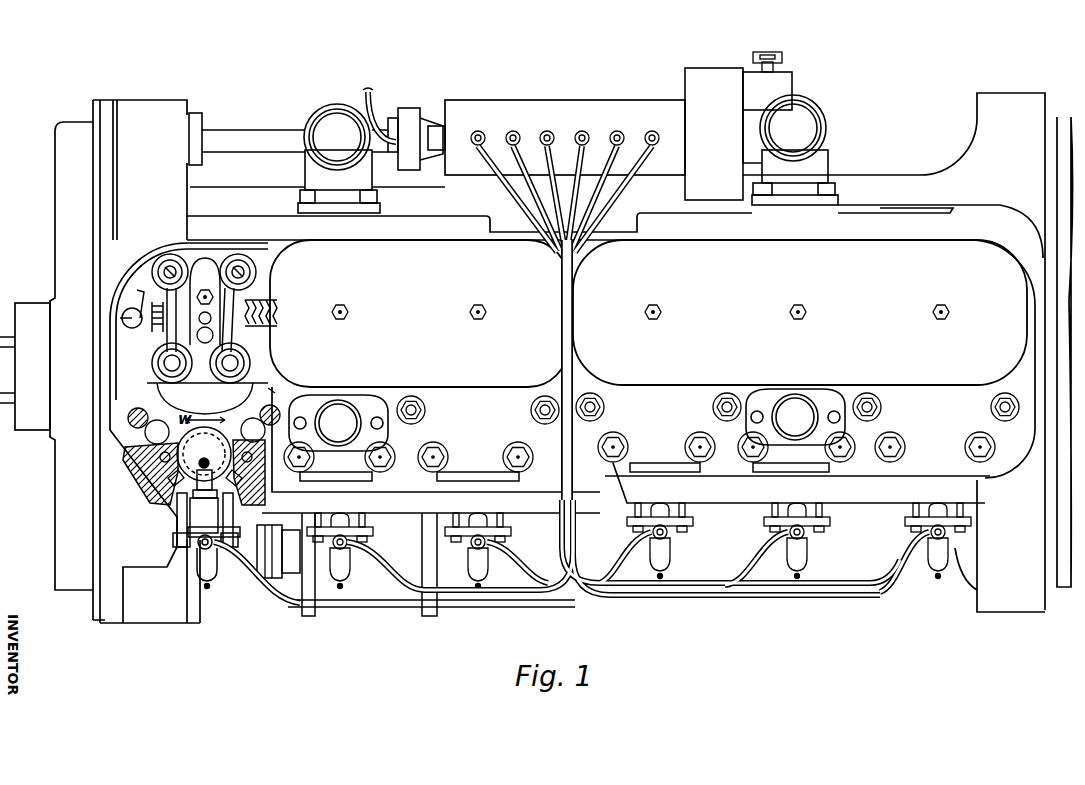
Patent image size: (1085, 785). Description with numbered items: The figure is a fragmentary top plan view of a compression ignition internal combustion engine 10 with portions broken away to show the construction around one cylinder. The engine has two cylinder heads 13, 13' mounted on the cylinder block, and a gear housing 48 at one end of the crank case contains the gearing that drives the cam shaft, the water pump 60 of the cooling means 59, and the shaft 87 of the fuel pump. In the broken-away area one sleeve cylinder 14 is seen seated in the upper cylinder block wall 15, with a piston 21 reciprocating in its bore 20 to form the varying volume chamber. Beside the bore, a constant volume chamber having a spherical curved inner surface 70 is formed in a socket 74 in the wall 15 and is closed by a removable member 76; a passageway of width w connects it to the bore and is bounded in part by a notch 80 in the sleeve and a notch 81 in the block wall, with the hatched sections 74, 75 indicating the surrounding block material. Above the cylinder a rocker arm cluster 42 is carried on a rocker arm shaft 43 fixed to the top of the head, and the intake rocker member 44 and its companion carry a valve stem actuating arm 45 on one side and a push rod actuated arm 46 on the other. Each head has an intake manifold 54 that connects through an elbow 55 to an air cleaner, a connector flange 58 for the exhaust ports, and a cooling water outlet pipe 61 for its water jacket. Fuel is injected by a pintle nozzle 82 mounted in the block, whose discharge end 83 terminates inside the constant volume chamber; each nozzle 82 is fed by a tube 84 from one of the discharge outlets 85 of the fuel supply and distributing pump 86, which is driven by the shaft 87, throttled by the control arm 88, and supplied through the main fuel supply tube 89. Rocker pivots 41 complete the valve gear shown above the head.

The compression ignition internal combustion engine 10 is at (172, 624).
The cylinder head 13 is at (419, 333).
The cylinder head 13' is at (800, 333).
The cylinder 14 is at (268, 390).
The upper cylinder block wall 15 is at (275, 392).
The bore 20 is at (250, 392).
The piston 21 is at (205, 394).
The rocker arm pivot 41 is at (192, 358).
The rocker arm cluster 42 is at (199, 262).
The rocker arm shaft 43 is at (122, 318).
The rocker member 44 is at (165, 346).
The valve stem actuating arm 45 is at (277, 330).
The push rod actuated arm 46 is at (155, 280).
The gear housing 48 is at (115, 250).
The intake manifold 54 is at (615, 298).
The elbow 55 is at (568, 154).
The connector flange 58 is at (440, 481).
The cooling means 59 is at (335, 612).
The water pump 60 is at (388, 610).
The cooling water outlet pipe 61 is at (355, 400).
The curved inner surface 70 is at (194, 466).
The socket 74 is at (236, 480).
The coolant passage 75 is at (262, 480).
The removable member 76 is at (210, 435).
The notch 80 is at (148, 417).
The notch 81 is at (278, 408).
The pintle nozzle 82 is at (222, 586).
The discharge end 83 is at (197, 480).
The tube 84 is at (562, 260).
The discharge outlet 85 is at (480, 130).
The fuel supply and distributing pump 86 is at (536, 106).
The shaft 87 is at (270, 136).
The control arm 88 is at (764, 52).
The main fuel supply tube 89 is at (375, 100).